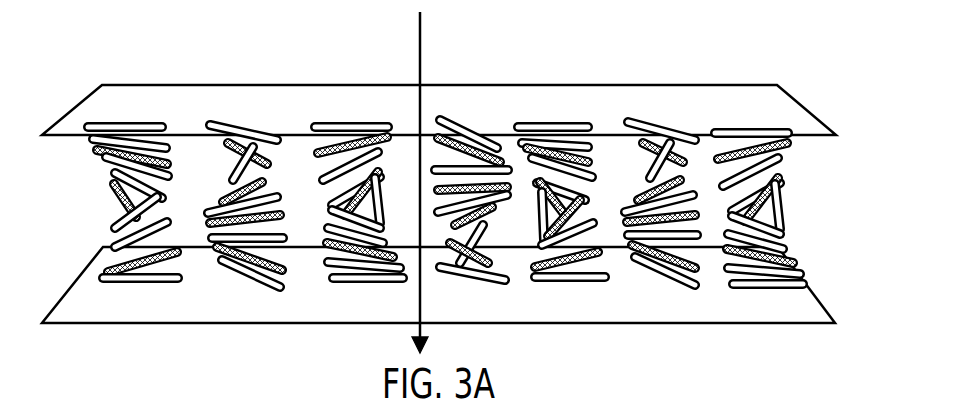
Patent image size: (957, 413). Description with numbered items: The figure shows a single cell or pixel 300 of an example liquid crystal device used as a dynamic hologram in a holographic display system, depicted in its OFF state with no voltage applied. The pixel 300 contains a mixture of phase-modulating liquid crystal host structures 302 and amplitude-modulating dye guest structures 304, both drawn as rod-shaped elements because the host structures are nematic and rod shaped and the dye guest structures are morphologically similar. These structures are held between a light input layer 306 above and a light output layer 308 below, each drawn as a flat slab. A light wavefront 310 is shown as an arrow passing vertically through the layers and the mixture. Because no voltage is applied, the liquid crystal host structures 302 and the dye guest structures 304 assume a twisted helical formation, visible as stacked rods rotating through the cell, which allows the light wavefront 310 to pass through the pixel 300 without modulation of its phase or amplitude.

The pixel 300 is at (738, 43).
The liquid crystal host structures 302 is at (567, 278).
The dye guest structures 304 is at (478, 266).
The light input layer 306 is at (217, 84).
The light output layer 308 is at (214, 323).
The light wavefront 310 is at (418, 47).